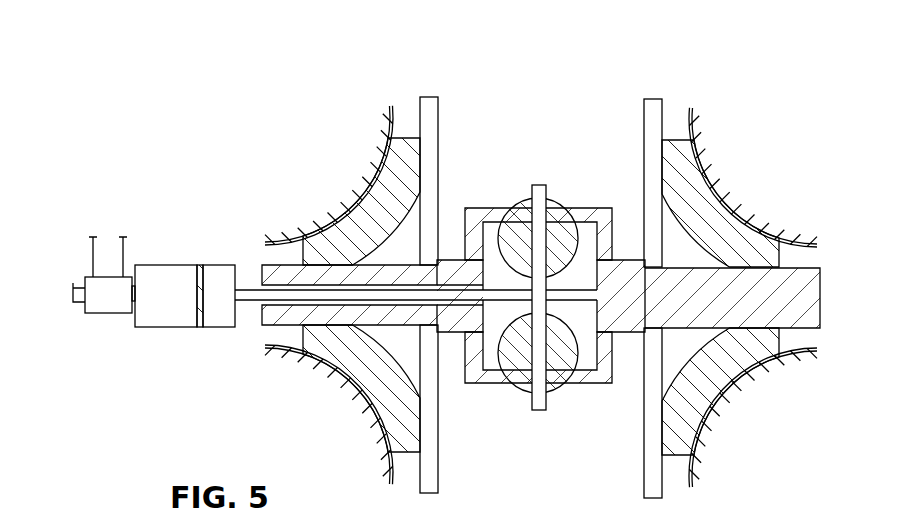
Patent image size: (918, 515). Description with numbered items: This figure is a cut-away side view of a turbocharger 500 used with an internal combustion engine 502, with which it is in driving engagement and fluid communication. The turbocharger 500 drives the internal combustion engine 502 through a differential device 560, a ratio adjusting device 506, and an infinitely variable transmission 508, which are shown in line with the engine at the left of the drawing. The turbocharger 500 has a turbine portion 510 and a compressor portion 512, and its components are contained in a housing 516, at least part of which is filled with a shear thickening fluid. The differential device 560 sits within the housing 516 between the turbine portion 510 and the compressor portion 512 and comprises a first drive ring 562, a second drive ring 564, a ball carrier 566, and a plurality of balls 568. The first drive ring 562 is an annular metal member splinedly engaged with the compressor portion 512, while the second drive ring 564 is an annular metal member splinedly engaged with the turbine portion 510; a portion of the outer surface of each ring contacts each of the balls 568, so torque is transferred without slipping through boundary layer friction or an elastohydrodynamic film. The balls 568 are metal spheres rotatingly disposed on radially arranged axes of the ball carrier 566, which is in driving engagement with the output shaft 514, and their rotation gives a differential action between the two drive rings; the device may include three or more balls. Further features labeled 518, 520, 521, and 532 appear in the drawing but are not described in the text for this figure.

The turbocharger 500 is at (701, 77).
The internal combustion engine 502 is at (105, 313).
The ratio adjusting device 506 is at (215, 327).
The infinitely variable transmission 508 is at (165, 327).
The turbine portion 510 is at (822, 293).
The compressor portion 512 is at (262, 266).
The output shaft 514 is at (252, 301).
The housing 516 is at (389, 107).
The electrical lead 518 is at (93, 275).
The electrical lead 520 is at (123, 275).
The hub 521 is at (409, 287).
The connector 532 is at (73, 303).
The differential device 560 is at (531, 113).
The first drive ring 562 is at (472, 208).
The second drive ring 564 is at (598, 383).
The ball carrier 566 is at (540, 185).
The plurality of balls 568 is at (575, 264).